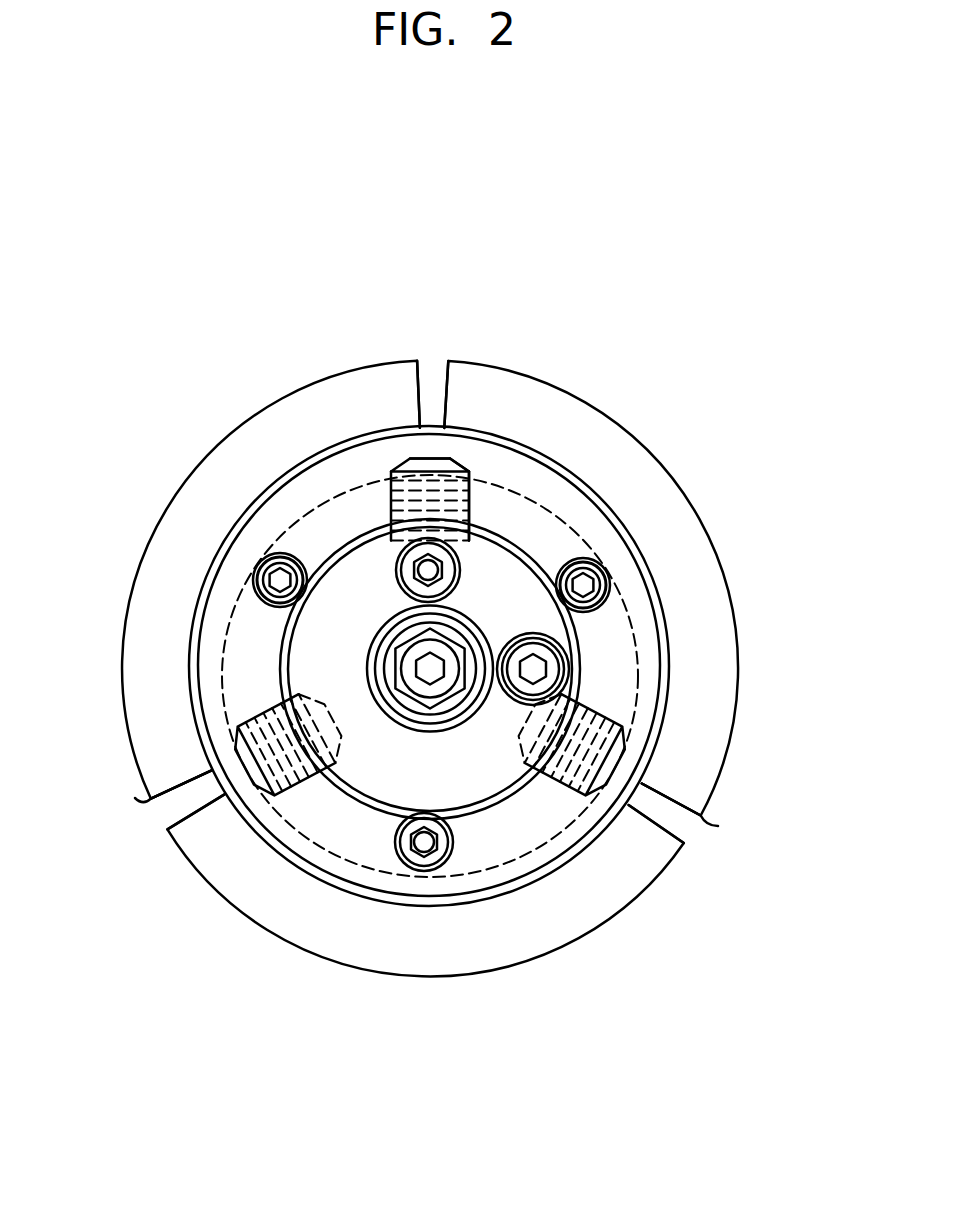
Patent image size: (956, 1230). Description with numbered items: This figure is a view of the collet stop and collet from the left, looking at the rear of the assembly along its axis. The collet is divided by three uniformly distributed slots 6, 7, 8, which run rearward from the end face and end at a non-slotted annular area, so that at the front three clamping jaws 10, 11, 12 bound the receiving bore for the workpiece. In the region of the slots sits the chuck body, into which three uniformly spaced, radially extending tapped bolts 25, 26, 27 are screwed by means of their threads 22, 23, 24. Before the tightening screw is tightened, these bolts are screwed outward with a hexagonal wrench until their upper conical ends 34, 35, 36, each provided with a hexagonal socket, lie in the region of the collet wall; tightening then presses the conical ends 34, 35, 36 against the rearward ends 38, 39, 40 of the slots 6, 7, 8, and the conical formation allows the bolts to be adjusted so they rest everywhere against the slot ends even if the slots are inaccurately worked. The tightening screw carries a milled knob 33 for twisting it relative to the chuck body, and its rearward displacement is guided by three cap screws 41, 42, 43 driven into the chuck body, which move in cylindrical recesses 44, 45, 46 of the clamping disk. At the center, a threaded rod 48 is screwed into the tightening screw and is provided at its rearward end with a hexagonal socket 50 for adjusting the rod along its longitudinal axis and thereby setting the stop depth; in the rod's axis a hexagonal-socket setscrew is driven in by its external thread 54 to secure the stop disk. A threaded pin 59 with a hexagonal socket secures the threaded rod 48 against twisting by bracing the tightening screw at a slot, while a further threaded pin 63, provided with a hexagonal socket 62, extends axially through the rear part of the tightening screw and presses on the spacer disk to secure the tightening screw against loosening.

The slot 6 is at (440, 362).
The slot 7 is at (148, 800).
The slot 8 is at (695, 822).
The clamping jaw 10 is at (277, 415).
The clamping jaw 11 is at (288, 928).
The clamping jaw 12 is at (632, 452).
The thread 22 is at (478, 470).
The thread 23 is at (261, 810).
The thread 24 is at (567, 807).
The tapped bolt 25 is at (397, 470).
The tapped bolt 26 is at (243, 732).
The tapped bolt 27 is at (593, 800).
The milled knob 33 is at (286, 641).
The conical end 34 is at (468, 458).
The conical end 35 is at (240, 800).
The conical end 36 is at (600, 762).
The rearward end of slot 38 is at (415, 455).
The rearward end of slot 39 is at (215, 778).
The rearward end of slot 40 is at (697, 833).
The cap screw 41 is at (275, 577).
The cap screw 42 is at (421, 873).
The cap screw 43 is at (598, 585).
The cylindrical recess 44 is at (277, 553).
The cylindrical recess 45 is at (424, 845).
The cylindrical recess 46 is at (592, 560).
The threaded rod 48 is at (448, 728).
The hexagonal socket 50 is at (455, 645).
The external thread 54 is at (418, 690).
The threaded pin 59 is at (397, 582).
The hexagonal socket 62 is at (562, 653).
The threaded pin 63 is at (546, 672).